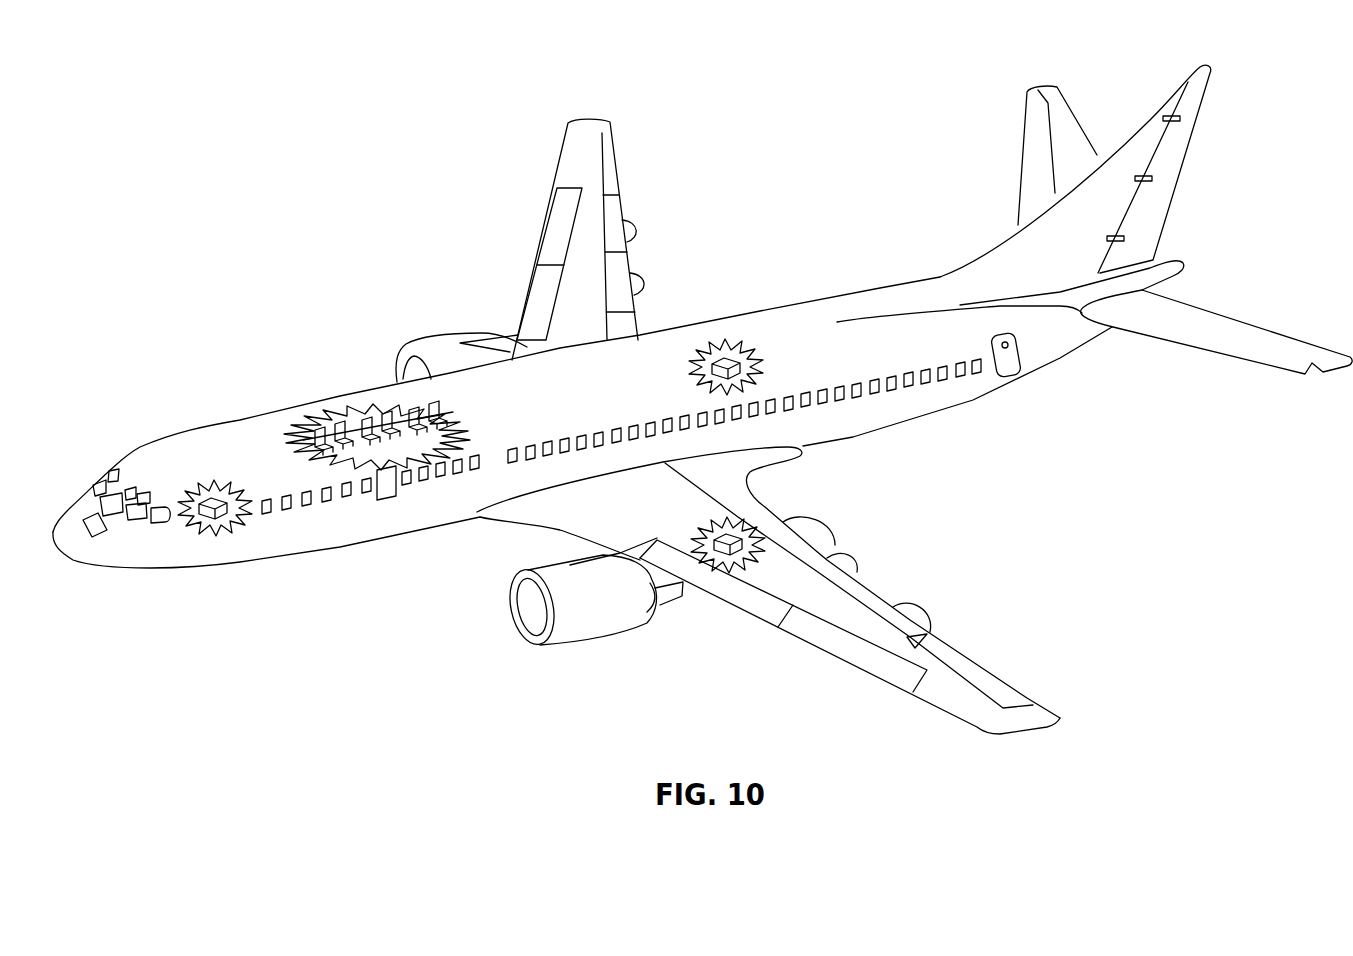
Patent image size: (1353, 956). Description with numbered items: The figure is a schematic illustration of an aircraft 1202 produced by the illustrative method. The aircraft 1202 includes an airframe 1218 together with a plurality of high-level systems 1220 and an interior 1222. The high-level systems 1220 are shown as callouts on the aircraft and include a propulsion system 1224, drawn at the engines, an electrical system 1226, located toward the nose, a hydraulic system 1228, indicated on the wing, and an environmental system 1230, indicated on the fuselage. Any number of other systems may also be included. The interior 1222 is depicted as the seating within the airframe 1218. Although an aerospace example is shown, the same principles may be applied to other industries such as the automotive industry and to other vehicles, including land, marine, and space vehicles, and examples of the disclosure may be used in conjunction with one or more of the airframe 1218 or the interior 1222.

The aircraft 1202 is at (175, 270).
The airframe 1218 is at (320, 390).
The high-level systems 1220 is at (1099, 541).
The interior 1222 is at (347, 448).
The propulsion system 1224 is at (442, 343).
The electrical system 1226 is at (213, 495).
The hydraulic system 1228 is at (730, 533).
The environmental system 1230 is at (716, 357).